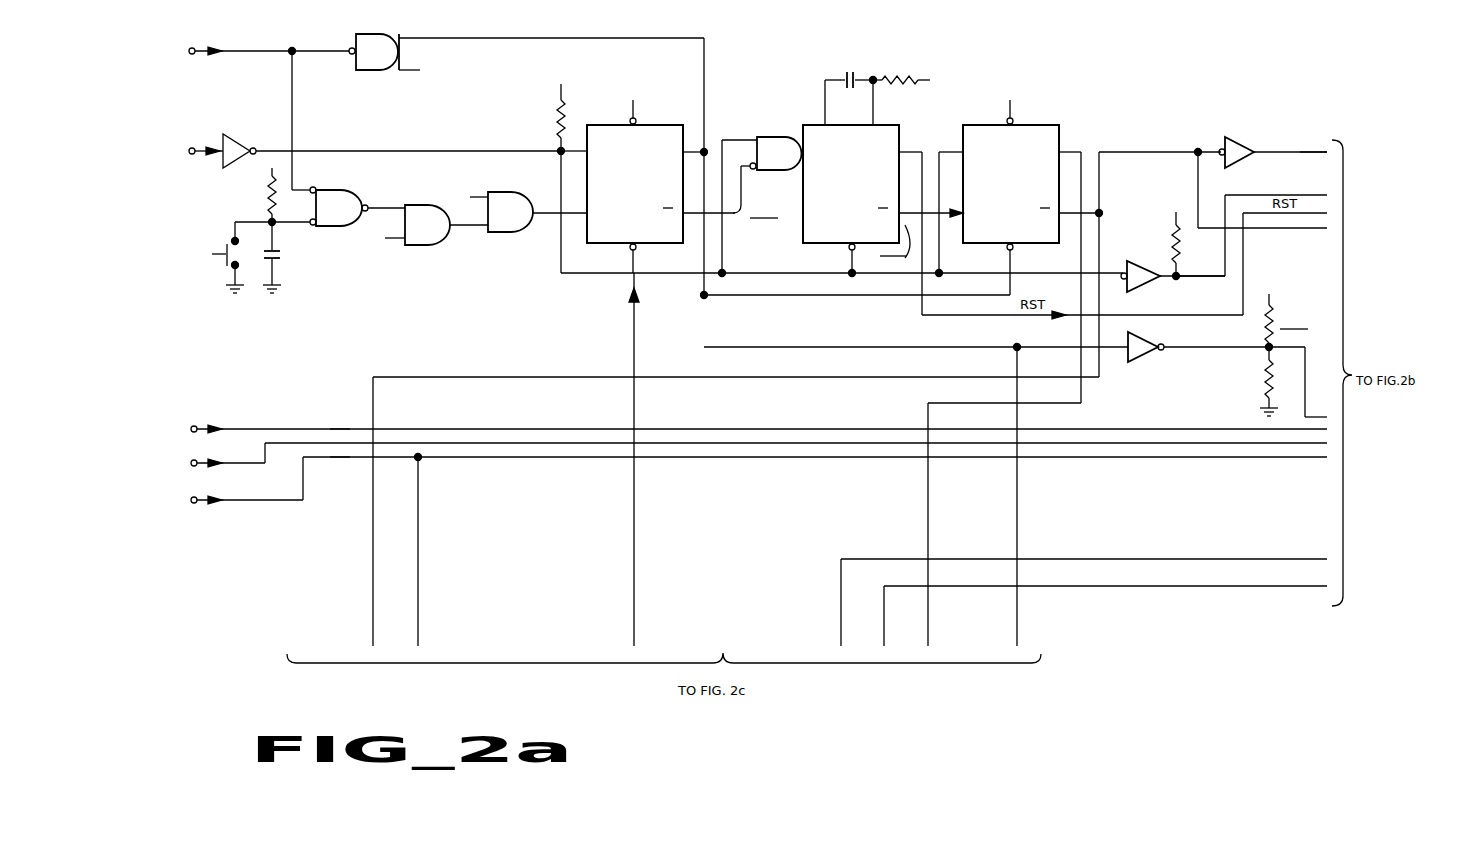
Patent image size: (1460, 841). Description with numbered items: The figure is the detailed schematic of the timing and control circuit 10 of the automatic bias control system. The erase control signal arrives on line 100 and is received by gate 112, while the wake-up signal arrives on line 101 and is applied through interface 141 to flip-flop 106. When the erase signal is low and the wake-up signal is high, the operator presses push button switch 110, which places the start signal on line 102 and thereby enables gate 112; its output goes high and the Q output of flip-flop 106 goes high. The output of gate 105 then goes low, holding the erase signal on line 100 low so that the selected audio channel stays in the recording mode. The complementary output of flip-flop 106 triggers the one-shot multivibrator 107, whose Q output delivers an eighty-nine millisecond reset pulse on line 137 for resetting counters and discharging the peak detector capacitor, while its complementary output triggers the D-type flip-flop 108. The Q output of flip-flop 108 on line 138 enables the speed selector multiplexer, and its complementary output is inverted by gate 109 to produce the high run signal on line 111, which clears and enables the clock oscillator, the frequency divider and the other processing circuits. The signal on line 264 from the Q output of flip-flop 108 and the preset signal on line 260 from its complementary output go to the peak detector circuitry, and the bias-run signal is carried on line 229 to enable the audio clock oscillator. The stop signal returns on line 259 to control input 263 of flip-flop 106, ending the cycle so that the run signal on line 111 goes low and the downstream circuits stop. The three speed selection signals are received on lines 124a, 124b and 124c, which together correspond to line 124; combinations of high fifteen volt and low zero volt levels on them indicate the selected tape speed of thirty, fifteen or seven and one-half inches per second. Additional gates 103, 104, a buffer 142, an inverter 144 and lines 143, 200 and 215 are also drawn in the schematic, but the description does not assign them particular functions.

The timing and control circuit 10 is at (776, 48).
The line 100 is at (201, 49).
The line 101 is at (204, 149).
The line 102 is at (246, 215).
The AND gate 7408 103 is at (426, 200).
The AND gate 7408 104 is at (522, 190).
The gate 105 is at (375, 36).
The flip-flop 106 is at (672, 128).
The one-shot multivibrator 107 is at (807, 130).
The D-type flip-flop 108 is at (1048, 128).
The gate 109 is at (1240, 141).
The push button switch 110 is at (208, 257).
The line 111 is at (1305, 155).
The gate 112 is at (337, 188).
The line 124 is at (339, 416).
The line 124a is at (737, 422).
The line 124b is at (737, 456).
The line 124c is at (436, 622).
The line 137 is at (1205, 318).
The line 138 is at (1312, 230).
The interface 141 is at (232, 138).
The buffer 7417 142 is at (1141, 262).
The line 143 is at (378, 151).
The inverter 7406 144 is at (1135, 356).
The line 200 is at (1203, 586).
The line 215 is at (1200, 559).
The line 229 is at (1019, 630).
The line 259 is at (636, 364).
The line 260 is at (370, 622).
The control input 263 is at (630, 257).
The line 264 is at (792, 377).